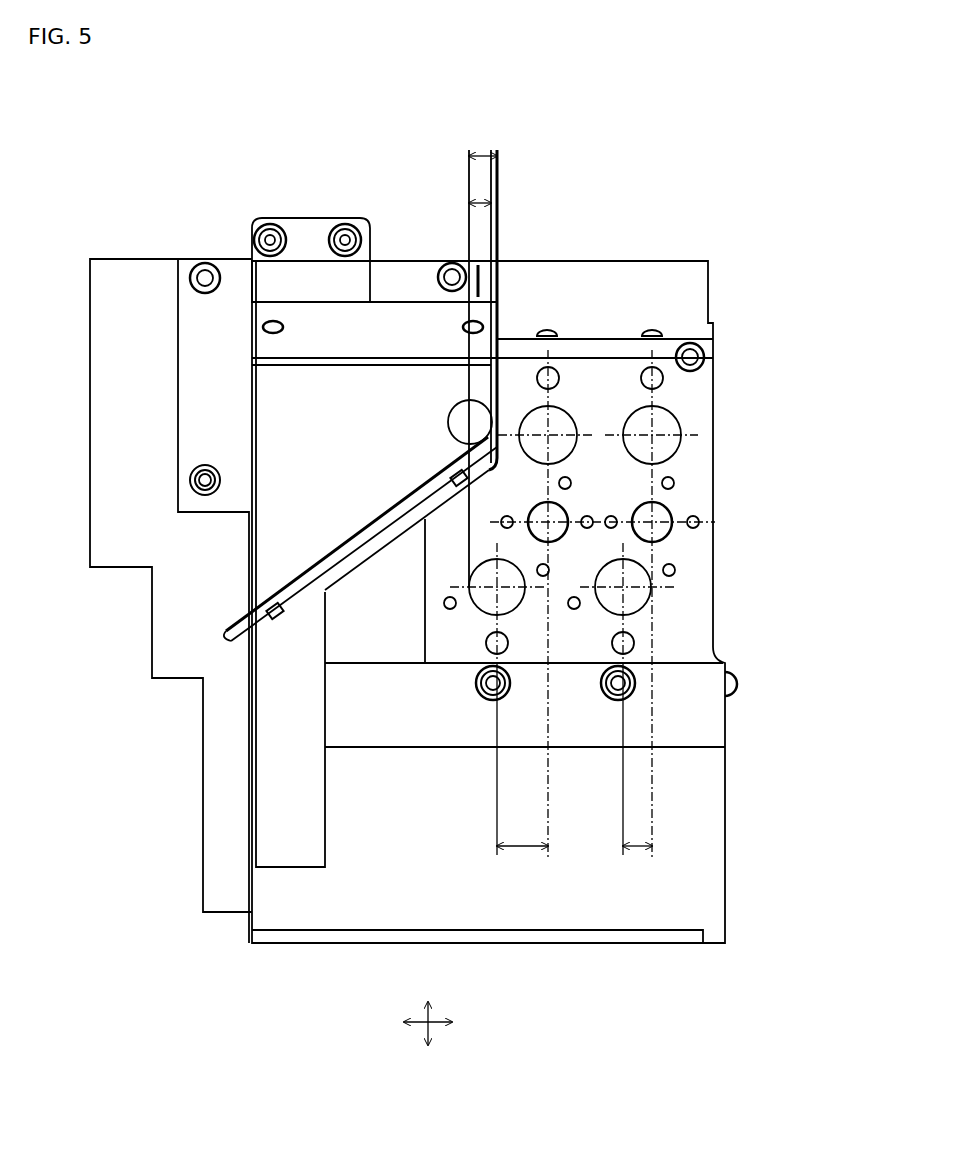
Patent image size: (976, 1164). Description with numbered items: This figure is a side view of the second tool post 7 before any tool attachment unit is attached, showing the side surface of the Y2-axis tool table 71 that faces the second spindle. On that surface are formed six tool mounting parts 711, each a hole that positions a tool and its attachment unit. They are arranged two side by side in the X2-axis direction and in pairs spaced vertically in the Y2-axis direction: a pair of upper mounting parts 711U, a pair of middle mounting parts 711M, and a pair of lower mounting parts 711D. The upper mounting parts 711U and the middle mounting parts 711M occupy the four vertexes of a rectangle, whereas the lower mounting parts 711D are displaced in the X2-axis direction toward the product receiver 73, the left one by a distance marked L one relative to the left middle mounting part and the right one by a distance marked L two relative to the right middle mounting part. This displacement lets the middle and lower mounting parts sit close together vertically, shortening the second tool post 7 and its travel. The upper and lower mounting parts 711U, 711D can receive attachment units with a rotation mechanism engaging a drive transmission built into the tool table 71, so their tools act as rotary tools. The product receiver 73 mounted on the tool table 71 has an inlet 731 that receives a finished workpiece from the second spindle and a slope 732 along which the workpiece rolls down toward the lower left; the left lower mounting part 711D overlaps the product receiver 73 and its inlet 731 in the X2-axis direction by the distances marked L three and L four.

The second tool post 7 is at (708, 238).
The Y2-axis tool table 71 is at (708, 553).
The tool mounting part 711 is at (605, 472).
The upper mounting part 711U is at (565, 407).
The middle mounting part 711M is at (556, 504).
The lower mounting part 711D is at (646, 597).
The product receiver 73 is at (393, 305).
The inlet 731 is at (455, 403).
The slope 732 is at (350, 533).